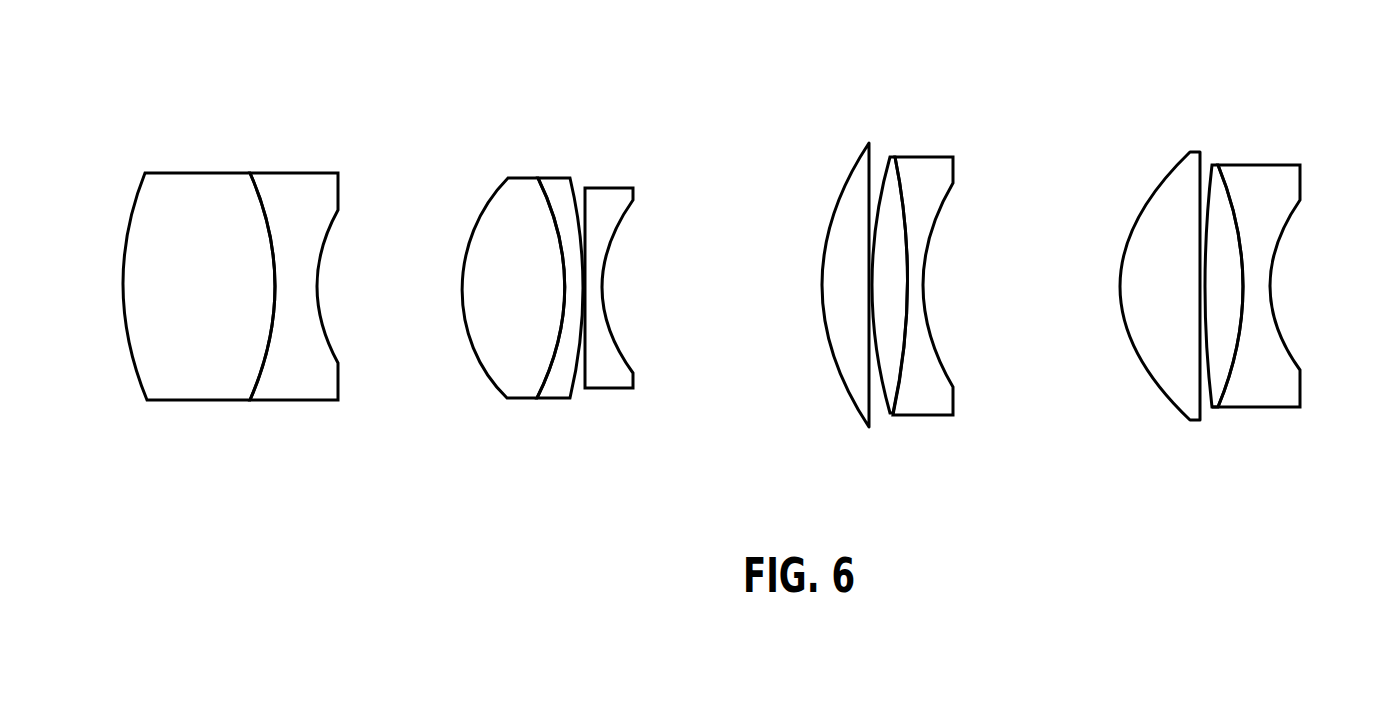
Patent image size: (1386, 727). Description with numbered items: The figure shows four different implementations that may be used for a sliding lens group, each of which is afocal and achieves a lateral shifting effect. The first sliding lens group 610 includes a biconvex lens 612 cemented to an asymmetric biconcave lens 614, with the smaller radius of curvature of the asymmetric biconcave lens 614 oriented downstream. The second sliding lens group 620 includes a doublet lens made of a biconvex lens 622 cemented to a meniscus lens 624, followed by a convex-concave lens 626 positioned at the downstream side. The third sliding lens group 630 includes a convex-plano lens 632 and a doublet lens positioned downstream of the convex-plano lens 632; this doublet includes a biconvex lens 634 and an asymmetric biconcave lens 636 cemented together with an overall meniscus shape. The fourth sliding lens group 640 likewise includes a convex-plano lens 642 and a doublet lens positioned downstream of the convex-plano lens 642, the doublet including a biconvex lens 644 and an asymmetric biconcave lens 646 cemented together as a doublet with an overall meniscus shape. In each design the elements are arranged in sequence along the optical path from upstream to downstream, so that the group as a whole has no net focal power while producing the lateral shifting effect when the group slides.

The sliding lens group 610 is at (207, 97).
The biconvex lens 612 is at (177, 172).
The asymmetric biconcave lens 614 is at (297, 172).
The sliding lens group 620 is at (519, 102).
The biconvex lens 622 is at (518, 177).
The meniscus lens 624 is at (553, 177).
The convex-concave lens 626 is at (627, 187).
The sliding lens group 630 is at (857, 70).
The convex-plano lens 632 is at (857, 147).
The biconvex lens 634 is at (890, 153).
The asymmetric biconcave lens 636 is at (953, 153).
The sliding lens group 640 is at (1165, 87).
The convex-plano lens 642 is at (1175, 158).
The biconvex lens 644 is at (1212, 162).
The asymmetric biconcave lens 646 is at (1295, 163).